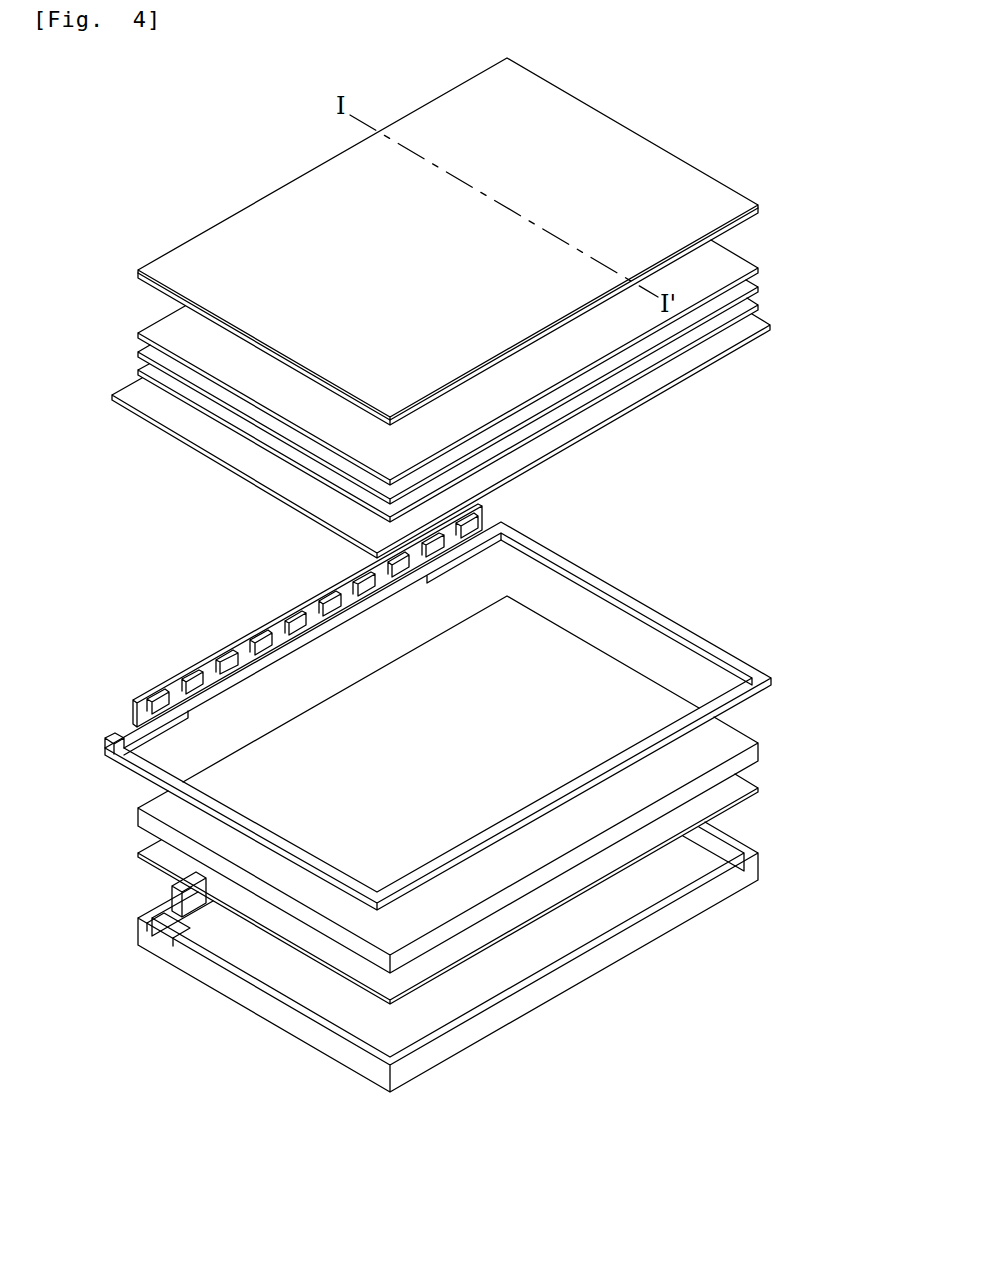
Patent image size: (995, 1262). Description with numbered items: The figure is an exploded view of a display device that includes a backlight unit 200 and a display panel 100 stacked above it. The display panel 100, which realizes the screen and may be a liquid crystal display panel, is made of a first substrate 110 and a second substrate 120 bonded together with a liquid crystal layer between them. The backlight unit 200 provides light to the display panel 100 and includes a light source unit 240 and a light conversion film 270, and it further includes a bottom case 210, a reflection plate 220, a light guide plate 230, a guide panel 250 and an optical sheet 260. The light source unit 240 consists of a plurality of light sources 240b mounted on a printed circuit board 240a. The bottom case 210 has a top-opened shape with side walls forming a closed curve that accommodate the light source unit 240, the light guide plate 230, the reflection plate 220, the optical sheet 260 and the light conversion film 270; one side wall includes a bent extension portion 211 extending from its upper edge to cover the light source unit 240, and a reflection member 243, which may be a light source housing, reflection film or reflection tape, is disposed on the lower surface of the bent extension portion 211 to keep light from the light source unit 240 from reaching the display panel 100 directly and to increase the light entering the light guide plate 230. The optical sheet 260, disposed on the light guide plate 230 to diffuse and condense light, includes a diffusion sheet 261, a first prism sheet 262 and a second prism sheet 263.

The display panel 100 is at (497, 241).
The first substrate 110 is at (476, 316).
The second substrate 120 is at (745, 196).
The backlight unit 200 is at (449, 667).
The bottom case 210 is at (447, 957).
The bent extension portion 211 is at (158, 884).
The reflection plate 220 is at (758, 790).
The light guide plate 230 is at (758, 747).
The light source unit 240 is at (305, 615).
The printed circuit board 240a is at (157, 688).
The light sources 240b is at (200, 683).
The reflection member 243 is at (188, 920).
The guide panel 250 is at (648, 607).
The optical sheet 260 is at (398, 381).
The diffusion sheet 261 is at (80, 300).
The first prism sheet 262 is at (143, 349).
The second prism sheet 263 is at (145, 330).
The light conversion film 270 is at (770, 326).